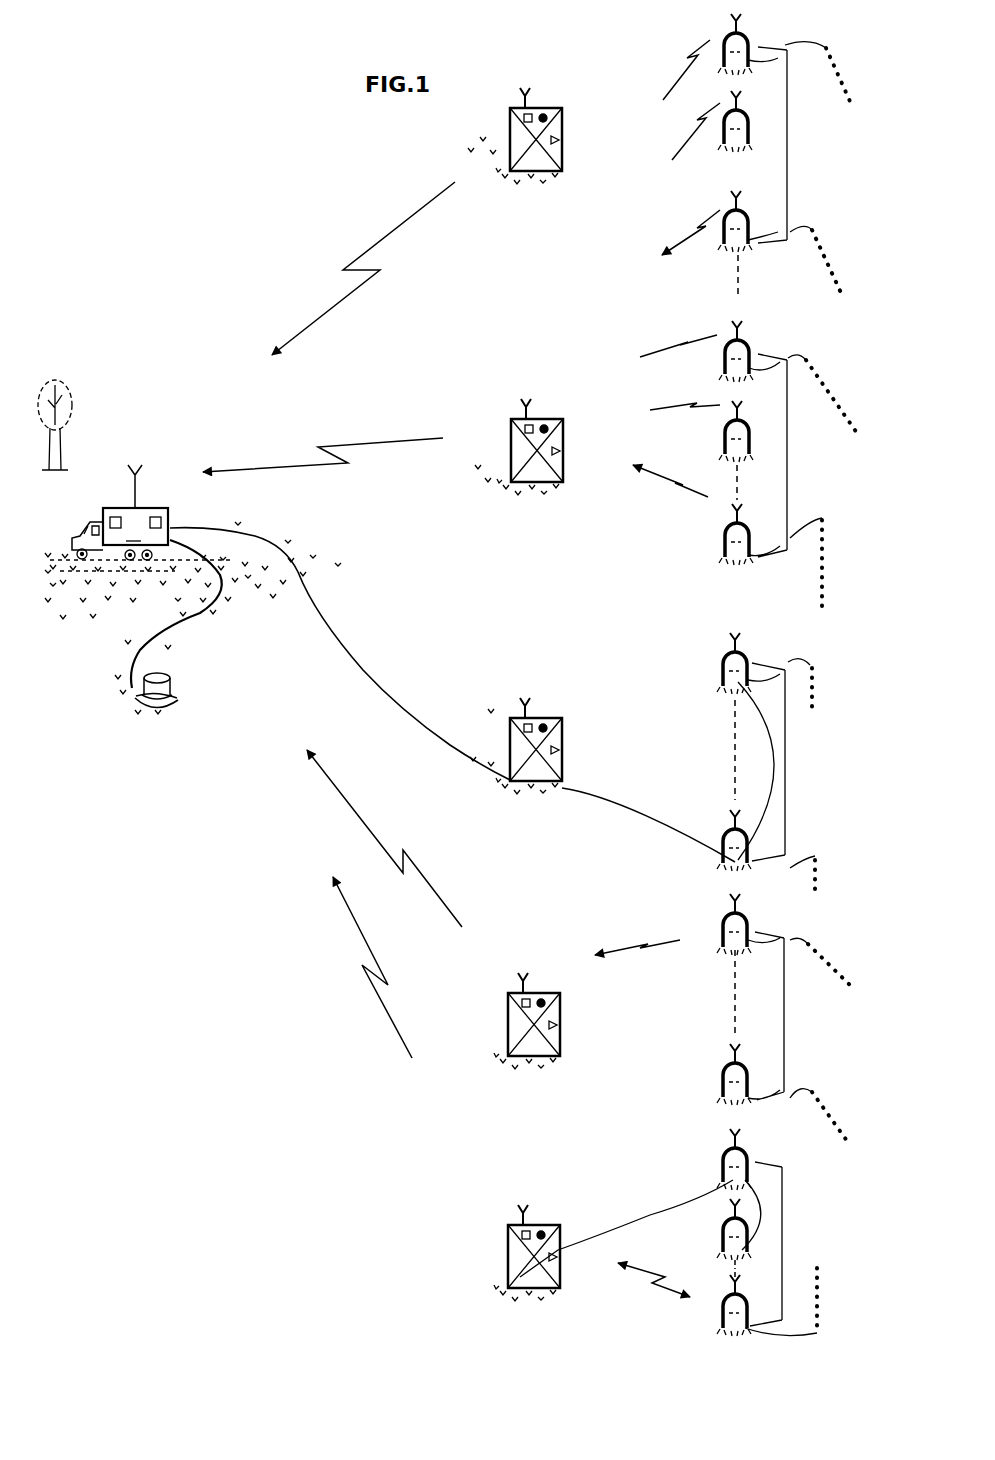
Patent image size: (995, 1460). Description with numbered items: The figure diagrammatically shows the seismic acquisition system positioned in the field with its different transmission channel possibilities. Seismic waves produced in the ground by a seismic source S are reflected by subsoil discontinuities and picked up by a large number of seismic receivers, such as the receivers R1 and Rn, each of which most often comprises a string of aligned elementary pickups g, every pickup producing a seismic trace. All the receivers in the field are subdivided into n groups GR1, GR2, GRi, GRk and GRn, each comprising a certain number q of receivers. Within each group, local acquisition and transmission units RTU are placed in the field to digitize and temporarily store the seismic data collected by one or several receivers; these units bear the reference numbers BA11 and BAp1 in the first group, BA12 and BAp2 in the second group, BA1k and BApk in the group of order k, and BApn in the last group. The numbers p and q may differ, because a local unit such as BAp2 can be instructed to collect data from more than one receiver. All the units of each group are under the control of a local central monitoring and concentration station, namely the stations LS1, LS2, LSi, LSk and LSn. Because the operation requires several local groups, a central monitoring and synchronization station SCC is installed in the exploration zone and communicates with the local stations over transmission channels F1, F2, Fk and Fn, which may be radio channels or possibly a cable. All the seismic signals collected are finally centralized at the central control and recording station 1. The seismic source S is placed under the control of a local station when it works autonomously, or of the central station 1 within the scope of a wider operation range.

The central monitoring and synchronization station SCC is at (120, 499).
The central control and recording station 1 is at (135, 526).
The seismic source S is at (161, 684).
The local central monitoring and concentration station LS1 is at (534, 128).
The local central monitoring and concentration station LS2 is at (535, 442).
The local central monitoring and concentration station LSi is at (533, 743).
The local station k LSk is at (536, 1021).
The local central monitoring and concentration station LSn is at (532, 1250).
The radio link frequency 1 F1 is at (363, 268).
The radio link frequency 2 F2 is at (323, 441).
The radio link frequency k Fk is at (384, 838).
The radio link frequency n Fn is at (372, 967).
The group of receivers GR1 is at (752, 153).
The group of receivers GR2 is at (745, 465).
The group of acquisition boxes i GRi is at (777, 764).
The group of receivers of order k GRk is at (725, 1019).
The group of receivers GRn is at (727, 1233).
The local acquisition and transmission unit BA11 is at (757, 43).
The local acquisition and transmission unit BAp1 is at (758, 243).
The acquisition box 1 of group 2 BA12 is at (758, 351).
The local acquisition and transmission unit BAp2 is at (753, 555).
The local acquisition and transmission unit BA1k is at (758, 924).
The local acquisition and transmission unit BApk is at (709, 1074).
The local acquisition and transmission unit BApn is at (707, 1306).
The local acquisition and transmission unit RTU is at (808, 181).
The receiver line 1 R1 is at (846, 64).
The receiver line n Rn is at (822, 1304).
The elementary pickup g is at (826, 255).